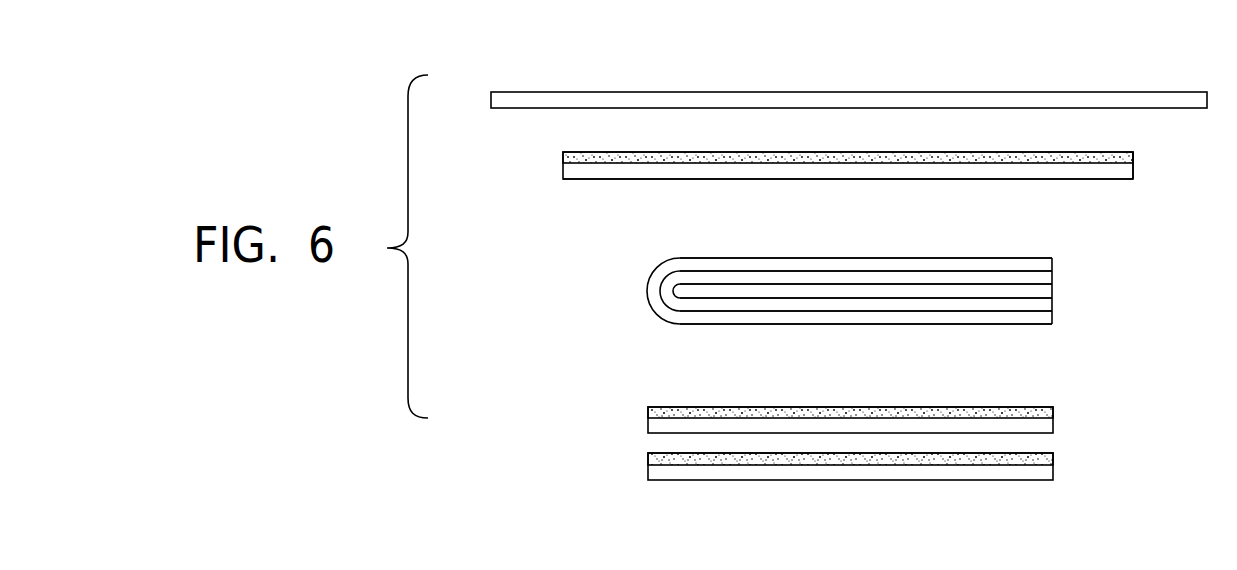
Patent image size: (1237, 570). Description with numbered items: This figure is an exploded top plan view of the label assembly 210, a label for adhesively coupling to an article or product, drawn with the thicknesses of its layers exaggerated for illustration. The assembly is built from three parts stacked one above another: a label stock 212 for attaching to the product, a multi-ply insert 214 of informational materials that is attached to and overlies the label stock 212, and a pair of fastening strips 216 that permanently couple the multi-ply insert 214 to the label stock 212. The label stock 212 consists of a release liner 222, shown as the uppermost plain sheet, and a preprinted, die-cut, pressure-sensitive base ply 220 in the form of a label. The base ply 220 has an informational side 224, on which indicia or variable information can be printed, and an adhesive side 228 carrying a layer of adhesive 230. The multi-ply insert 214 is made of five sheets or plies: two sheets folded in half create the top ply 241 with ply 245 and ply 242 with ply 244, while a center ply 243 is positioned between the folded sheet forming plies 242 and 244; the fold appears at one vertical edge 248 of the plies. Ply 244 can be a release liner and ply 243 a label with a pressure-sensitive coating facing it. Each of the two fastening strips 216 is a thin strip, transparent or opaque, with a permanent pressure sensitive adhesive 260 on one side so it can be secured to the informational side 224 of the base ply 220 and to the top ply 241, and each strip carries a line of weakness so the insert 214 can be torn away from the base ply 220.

The label assembly 210 is at (552, 80).
The release liner 222 is at (640, 91).
The label stock 212 is at (530, 139).
The base ply 220 is at (563, 169).
The adhesive side 228 is at (913, 160).
The layer of adhesive 230 is at (1133, 159).
The informational side 224 is at (1027, 180).
The multi-ply insert 214 is at (635, 313).
The vertical edge 248 is at (652, 275).
The ply 245 is at (1052, 261).
The ply 244 is at (1052, 271).
The center ply 243 is at (1052, 291).
The ply 242 is at (1052, 304).
The top ply 241 is at (1052, 318).
The fastening strips 216 is at (630, 441).
The pressure sensitive adhesive 260 is at (1055, 412).